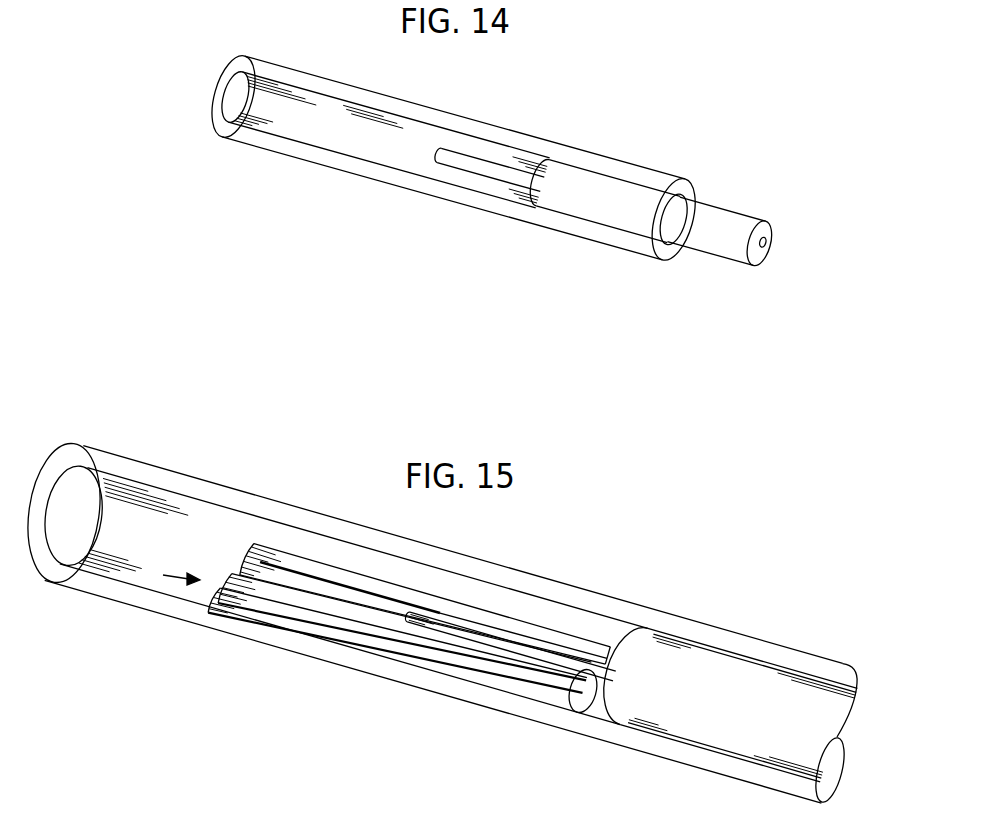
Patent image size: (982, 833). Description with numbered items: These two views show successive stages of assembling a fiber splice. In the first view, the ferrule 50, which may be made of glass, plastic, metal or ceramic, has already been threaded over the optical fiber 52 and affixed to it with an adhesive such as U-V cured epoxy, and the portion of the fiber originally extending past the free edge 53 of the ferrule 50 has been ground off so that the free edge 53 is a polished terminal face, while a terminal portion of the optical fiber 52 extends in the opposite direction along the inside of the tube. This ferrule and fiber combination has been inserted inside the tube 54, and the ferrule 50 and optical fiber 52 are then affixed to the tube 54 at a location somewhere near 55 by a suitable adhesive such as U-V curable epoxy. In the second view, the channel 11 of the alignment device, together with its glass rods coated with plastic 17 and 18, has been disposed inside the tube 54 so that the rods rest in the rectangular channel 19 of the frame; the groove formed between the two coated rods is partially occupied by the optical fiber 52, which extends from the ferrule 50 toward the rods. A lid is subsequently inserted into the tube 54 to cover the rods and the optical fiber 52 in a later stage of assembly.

In FIG. 14, the tube 54 is at (492, 125).
In FIG. 15, the tube 54 is at (254, 494).
In FIG. 14, the optical fiber 52 is at (517, 167).
In FIG. 15, the optical fiber 52 is at (438, 610).
In FIG. 14, the affixing location 55 is at (620, 207).
In FIG. 14, the ferrule 50 is at (730, 244).
In FIG. 15, the ferrule 50 is at (690, 704).
In FIG. 14, the free edge 53 is at (768, 239).
In FIG. 15, the channel 11 is at (333, 570).
In FIG. 15, the resilient coating 18 is at (241, 557).
In FIG. 15, the resilient coating 17 is at (558, 674).
In FIG. 15, the rectangular channel 19 is at (598, 683).